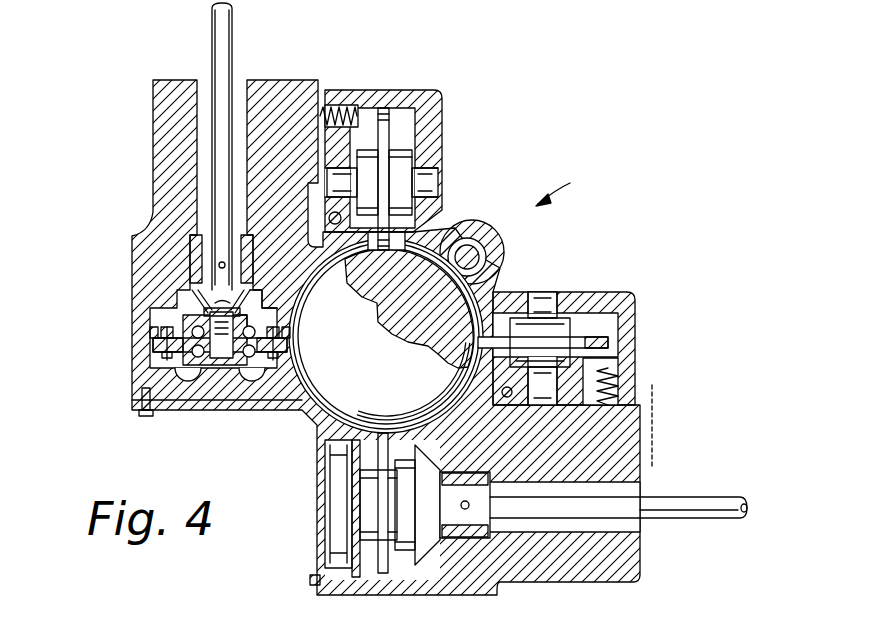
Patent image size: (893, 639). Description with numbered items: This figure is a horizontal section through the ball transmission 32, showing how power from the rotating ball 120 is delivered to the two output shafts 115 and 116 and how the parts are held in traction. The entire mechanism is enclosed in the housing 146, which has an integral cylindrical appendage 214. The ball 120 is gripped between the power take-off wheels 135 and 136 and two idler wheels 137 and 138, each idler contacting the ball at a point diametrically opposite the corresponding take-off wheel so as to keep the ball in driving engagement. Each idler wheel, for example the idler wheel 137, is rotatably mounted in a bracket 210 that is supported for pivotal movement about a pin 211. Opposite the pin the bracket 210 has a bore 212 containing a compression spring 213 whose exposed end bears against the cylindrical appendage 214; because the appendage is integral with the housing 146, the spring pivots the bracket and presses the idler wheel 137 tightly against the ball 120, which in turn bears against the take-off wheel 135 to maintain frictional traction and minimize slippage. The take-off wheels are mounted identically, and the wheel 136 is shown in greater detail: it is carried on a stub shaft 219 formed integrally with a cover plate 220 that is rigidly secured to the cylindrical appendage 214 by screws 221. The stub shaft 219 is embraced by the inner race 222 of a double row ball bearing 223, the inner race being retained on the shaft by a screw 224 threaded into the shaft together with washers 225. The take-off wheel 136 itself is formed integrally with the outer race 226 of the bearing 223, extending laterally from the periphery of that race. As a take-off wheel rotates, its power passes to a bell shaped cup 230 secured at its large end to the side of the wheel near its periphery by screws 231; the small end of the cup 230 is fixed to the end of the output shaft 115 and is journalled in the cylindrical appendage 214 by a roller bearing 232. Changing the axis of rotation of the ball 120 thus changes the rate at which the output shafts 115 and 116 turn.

The ball transmission 32 is at (561, 183).
The output shaft 115 is at (222, 15).
The output shaft 116 is at (683, 510).
The ball 120 is at (488, 300).
The power take-off wheel 135 is at (381, 575).
The power take-off wheel 136 is at (158, 338).
The idler wheel 137 is at (390, 125).
The idler wheel 138 is at (610, 342).
The housing 146 is at (430, 228).
The bracket 210 is at (442, 140).
The pin 211 is at (329, 216).
The bore 212 is at (353, 100).
The compression spring 213 is at (330, 105).
The cylindrical appendage 214 is at (165, 97).
The stub shaft 219 is at (223, 360).
The cover plate 220 is at (170, 407).
The screws 221 is at (138, 413).
The inner race 222 is at (250, 318).
The double row ball bearing 223 is at (183, 325).
The screw 224 is at (262, 300).
The washers 225 is at (200, 308).
The outer race 226 is at (260, 360).
The bell shaped cup 230 is at (190, 302).
The screws 231 is at (155, 332).
The roller bearing 232 is at (190, 255).